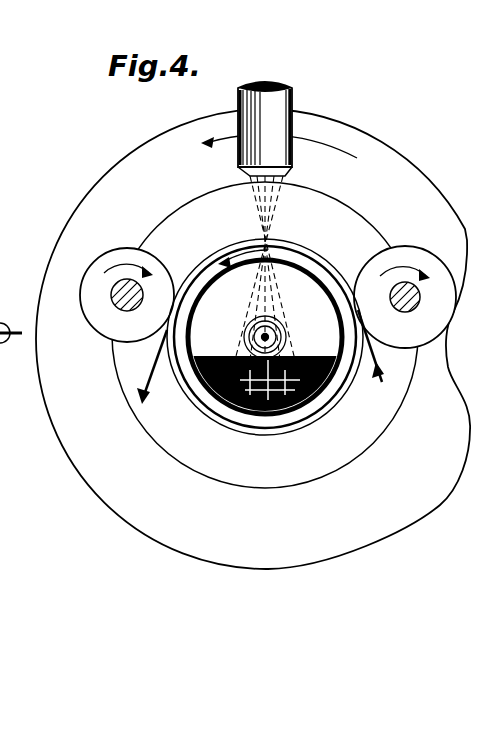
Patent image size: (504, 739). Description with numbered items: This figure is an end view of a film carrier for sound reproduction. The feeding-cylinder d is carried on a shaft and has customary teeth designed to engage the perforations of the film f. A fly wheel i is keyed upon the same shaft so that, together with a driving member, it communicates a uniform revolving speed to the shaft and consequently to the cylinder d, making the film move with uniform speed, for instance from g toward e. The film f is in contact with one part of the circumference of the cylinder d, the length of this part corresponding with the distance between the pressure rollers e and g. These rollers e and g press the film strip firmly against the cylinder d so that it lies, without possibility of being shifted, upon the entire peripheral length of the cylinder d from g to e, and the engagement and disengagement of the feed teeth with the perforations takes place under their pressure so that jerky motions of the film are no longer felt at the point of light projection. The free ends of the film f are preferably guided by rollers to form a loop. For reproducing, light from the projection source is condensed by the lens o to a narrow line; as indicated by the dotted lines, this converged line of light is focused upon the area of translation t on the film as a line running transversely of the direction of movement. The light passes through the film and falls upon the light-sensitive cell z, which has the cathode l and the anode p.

The fly wheel i is at (385, 165).
The pressure roller e is at (157, 272).
The pressure roller g is at (438, 280).
The feeding-cylinder d is at (310, 257).
The cell z is at (320, 287).
The cathode l is at (237, 405).
The anode p is at (283, 332).
The area of translation t is at (267, 238).
The lens o is at (285, 108).
The film f is at (152, 371).